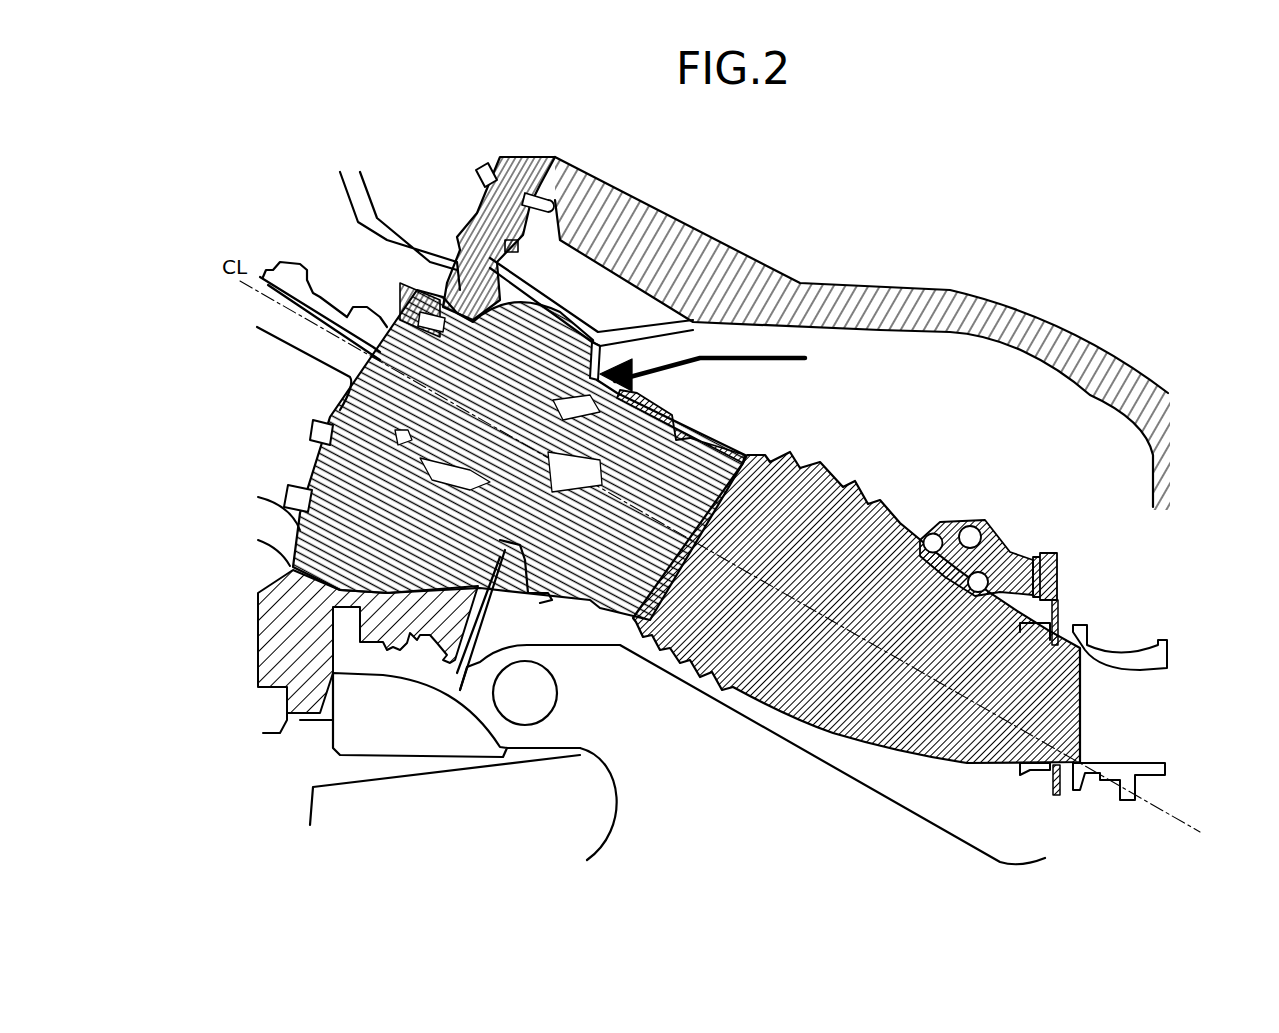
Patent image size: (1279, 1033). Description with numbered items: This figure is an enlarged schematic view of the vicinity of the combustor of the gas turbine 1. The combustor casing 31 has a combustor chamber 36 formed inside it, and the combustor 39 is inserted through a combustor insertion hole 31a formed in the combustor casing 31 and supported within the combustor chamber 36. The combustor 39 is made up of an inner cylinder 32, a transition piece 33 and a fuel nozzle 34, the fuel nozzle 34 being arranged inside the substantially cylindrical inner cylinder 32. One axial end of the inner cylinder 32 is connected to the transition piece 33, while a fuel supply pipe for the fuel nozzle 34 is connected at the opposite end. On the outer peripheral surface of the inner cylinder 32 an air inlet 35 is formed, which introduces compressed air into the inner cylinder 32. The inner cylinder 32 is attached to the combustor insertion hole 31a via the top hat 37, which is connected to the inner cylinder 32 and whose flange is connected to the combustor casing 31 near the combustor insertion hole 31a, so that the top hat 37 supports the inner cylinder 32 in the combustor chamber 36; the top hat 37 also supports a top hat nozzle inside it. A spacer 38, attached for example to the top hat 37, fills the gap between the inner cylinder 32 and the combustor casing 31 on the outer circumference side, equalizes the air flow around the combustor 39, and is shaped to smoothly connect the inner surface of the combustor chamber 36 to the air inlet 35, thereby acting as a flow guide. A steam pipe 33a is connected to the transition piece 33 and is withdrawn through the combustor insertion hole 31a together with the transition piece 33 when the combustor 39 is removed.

The gas turbine 1 is at (918, 189).
The combustor casing 31 is at (725, 272).
The combustor insertion hole 31a is at (580, 242).
The inner cylinder 32 is at (700, 437).
The transition piece 33 is at (835, 482).
The steam pipe 33a is at (920, 530).
The fuel nozzle 34 is at (390, 320).
The air inlet 35 is at (597, 358).
The combustor chamber 36 is at (938, 345).
The top hat 37 is at (470, 212).
The spacer 38 is at (688, 330).
The combustor 39 is at (905, 432).